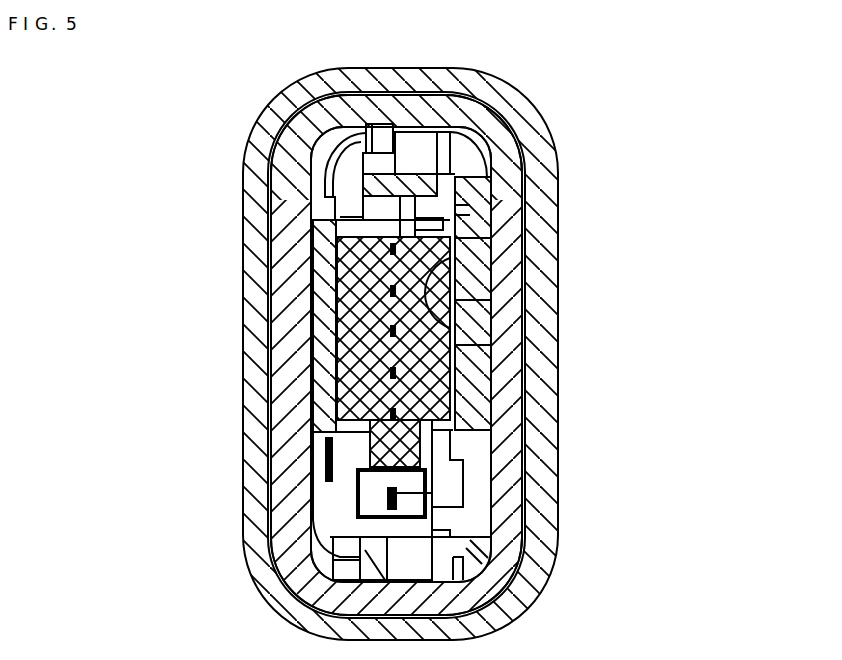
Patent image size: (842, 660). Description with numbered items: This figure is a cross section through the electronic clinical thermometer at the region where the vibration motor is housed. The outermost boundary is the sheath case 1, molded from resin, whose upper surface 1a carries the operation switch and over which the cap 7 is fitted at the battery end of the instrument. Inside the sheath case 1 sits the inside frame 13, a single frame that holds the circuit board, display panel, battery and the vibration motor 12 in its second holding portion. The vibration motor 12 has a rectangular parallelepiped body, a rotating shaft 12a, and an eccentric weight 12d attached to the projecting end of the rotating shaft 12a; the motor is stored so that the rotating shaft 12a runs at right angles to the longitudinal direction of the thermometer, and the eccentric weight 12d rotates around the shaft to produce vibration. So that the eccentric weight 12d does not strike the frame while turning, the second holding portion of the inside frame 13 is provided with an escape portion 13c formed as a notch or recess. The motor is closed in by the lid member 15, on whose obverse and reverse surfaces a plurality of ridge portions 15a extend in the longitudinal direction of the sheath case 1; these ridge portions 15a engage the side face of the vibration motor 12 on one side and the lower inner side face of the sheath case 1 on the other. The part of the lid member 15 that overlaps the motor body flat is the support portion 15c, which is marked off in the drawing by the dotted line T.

The cap 7 is at (525, 121).
The sheath case 1 is at (297, 157).
The upper surface 1a is at (285, 320).
The inside frame 13 is at (320, 279).
The escape portion 13c is at (345, 460).
The vibration motor 12 is at (340, 350).
The rotating shaft 12a is at (465, 425).
The eccentric weight 12d is at (480, 505).
The lid member 15 is at (492, 203).
The ridge portions 15a is at (455, 255).
The support portion 15c is at (500, 390).
The dotted line T is at (462, 212).